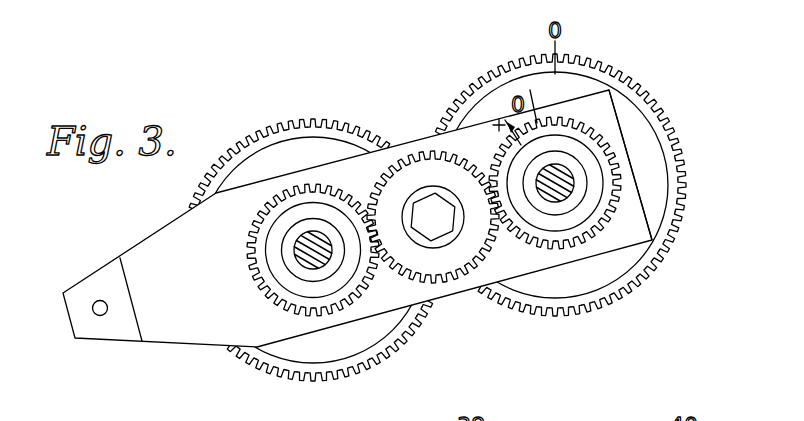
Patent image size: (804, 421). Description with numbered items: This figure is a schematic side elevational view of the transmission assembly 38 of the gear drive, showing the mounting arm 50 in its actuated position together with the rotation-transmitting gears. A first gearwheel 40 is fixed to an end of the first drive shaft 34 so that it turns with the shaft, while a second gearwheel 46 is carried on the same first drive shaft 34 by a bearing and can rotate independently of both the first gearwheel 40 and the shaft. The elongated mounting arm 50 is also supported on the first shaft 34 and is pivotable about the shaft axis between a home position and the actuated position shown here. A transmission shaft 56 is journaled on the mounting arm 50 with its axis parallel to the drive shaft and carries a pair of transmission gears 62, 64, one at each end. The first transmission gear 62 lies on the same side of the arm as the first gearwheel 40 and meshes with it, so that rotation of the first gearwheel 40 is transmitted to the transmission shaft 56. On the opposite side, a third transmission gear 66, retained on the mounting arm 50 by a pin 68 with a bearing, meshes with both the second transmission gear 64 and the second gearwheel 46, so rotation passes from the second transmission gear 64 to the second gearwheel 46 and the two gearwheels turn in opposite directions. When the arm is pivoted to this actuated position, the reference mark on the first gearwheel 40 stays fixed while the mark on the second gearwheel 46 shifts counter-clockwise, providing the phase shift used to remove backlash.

The first drive shaft 34 is at (553, 167).
The transmission assembly 38 is at (398, 102).
The first gearwheel 40 is at (660, 118).
The second gearwheel 46 is at (649, 214).
The mounting arm 50 is at (182, 317).
The transmission shaft 56 is at (297, 257).
The first transmission gear 62 is at (293, 133).
The second transmission gear 64 is at (265, 220).
The third transmission gear 66 is at (403, 252).
The pin 68 is at (445, 216).